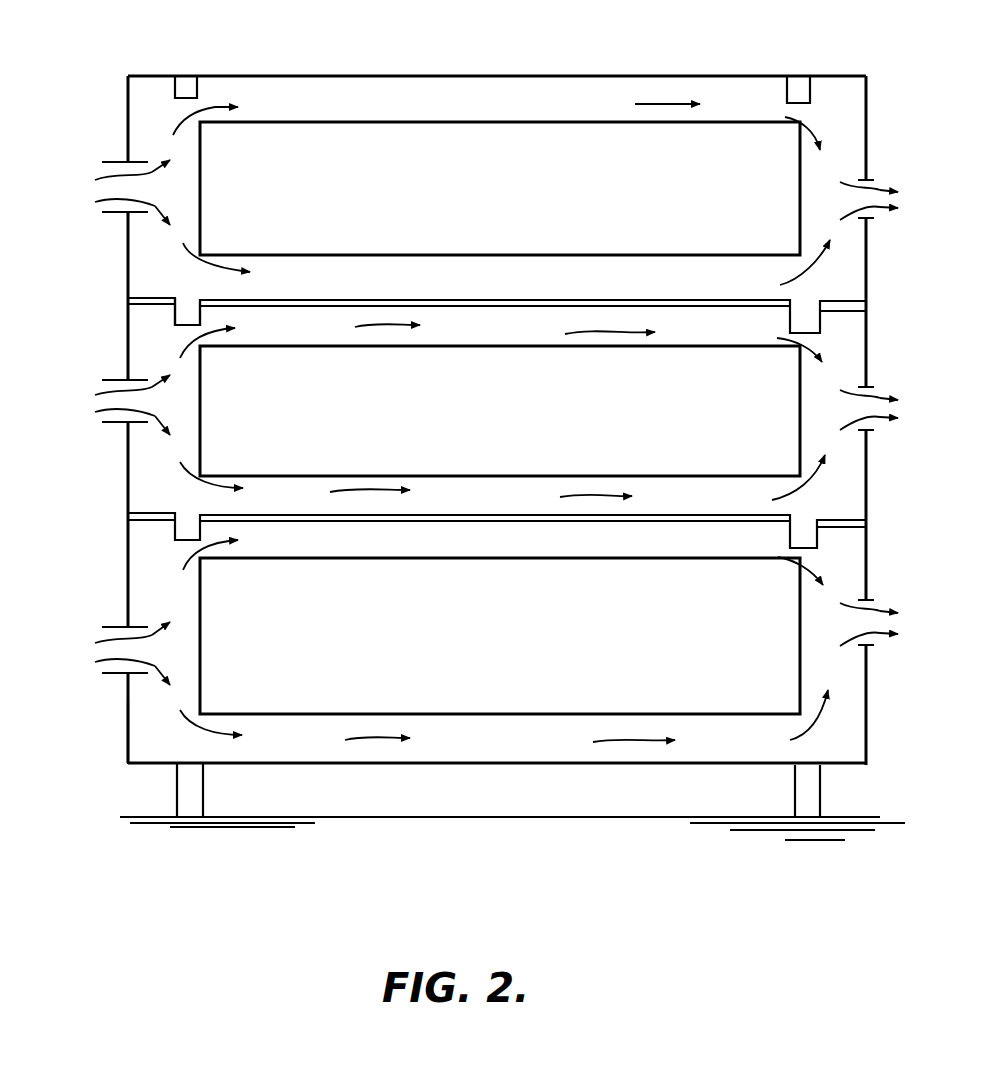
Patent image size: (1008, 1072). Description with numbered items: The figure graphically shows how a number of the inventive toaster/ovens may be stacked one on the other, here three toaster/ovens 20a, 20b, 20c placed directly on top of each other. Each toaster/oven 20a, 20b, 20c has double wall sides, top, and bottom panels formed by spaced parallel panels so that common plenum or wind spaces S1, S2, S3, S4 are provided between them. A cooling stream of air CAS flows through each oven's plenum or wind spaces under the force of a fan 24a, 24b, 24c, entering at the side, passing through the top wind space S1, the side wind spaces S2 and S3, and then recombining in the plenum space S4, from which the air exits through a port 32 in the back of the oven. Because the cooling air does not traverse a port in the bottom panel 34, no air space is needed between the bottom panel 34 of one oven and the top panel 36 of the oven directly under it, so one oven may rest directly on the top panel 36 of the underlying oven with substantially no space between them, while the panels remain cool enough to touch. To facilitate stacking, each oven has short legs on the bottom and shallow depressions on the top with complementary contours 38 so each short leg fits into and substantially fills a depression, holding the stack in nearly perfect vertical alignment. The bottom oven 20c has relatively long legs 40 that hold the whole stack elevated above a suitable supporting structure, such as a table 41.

The plenum or wind space S1 is at (445, 95).
The plenum or wind space S2 is at (148, 118).
The plenum or wind space S3 is at (340, 270).
The plenum space S4 is at (843, 112).
The cooling stream of air CAS is at (215, 105).
The toaster/oven 20a is at (128, 257).
The toaster/oven 20b is at (128, 465).
The bottom toaster/oven 20c is at (128, 730).
The fan 24a is at (113, 160).
The fan 24b is at (113, 378).
The fan 24c is at (113, 625).
The port 32 is at (875, 180).
The bottom panel 34 is at (845, 300).
The top panel 36 is at (852, 320).
The complementary contours 38 is at (178, 320).
The long legs 40 is at (200, 793).
The table 41 is at (430, 818).